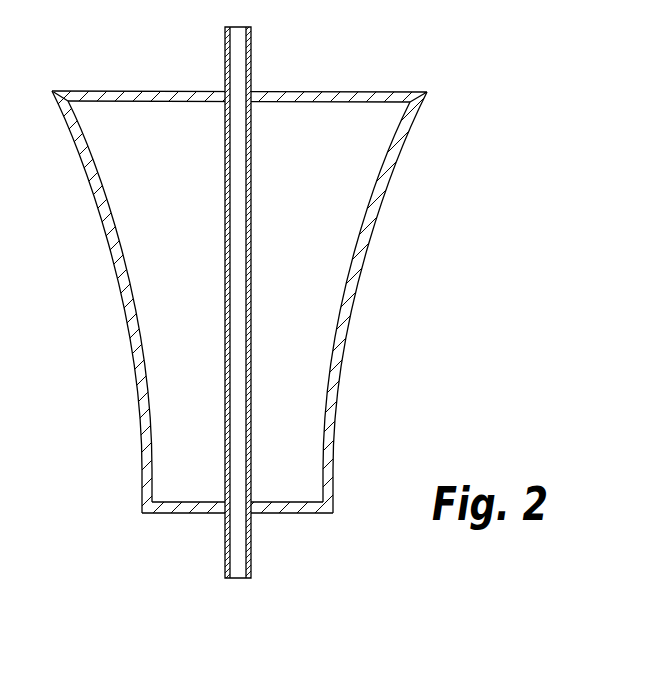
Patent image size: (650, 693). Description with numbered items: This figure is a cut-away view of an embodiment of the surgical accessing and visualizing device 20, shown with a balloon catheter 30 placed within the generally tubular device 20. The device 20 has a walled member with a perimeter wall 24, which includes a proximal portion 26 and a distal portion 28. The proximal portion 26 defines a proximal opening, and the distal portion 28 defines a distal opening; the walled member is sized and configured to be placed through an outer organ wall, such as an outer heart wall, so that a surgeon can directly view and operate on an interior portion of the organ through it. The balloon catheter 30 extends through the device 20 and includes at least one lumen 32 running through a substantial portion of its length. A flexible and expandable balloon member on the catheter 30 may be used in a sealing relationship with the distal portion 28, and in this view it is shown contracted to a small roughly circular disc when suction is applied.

The surgical accessing and visualizing device 20 is at (292, 304).
The perimeter wall 24 is at (373, 245).
The proximal portion 26 is at (112, 90).
The distal portion 28 is at (280, 515).
The balloon catheter 30 is at (284, 289).
The lumen 32 is at (243, 73).